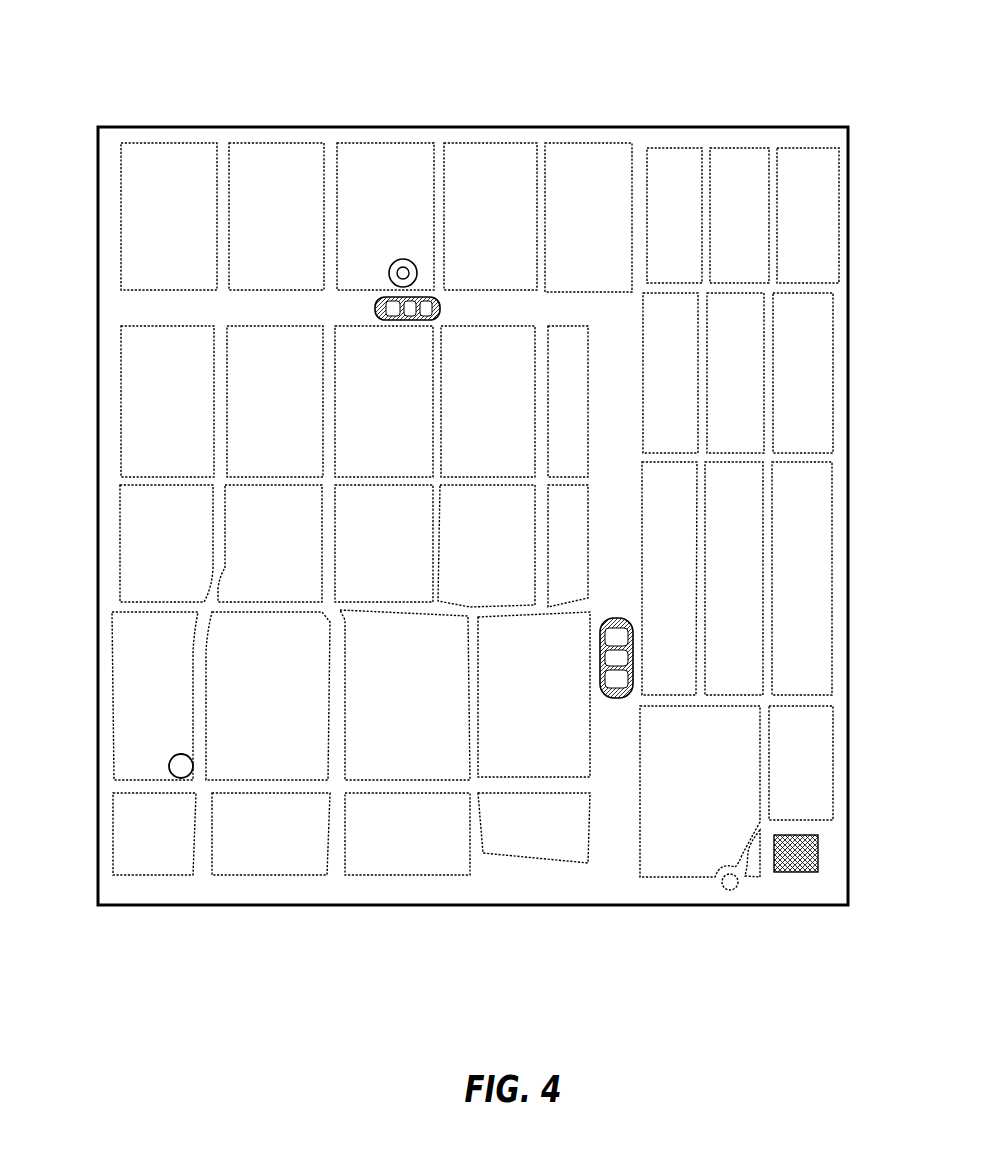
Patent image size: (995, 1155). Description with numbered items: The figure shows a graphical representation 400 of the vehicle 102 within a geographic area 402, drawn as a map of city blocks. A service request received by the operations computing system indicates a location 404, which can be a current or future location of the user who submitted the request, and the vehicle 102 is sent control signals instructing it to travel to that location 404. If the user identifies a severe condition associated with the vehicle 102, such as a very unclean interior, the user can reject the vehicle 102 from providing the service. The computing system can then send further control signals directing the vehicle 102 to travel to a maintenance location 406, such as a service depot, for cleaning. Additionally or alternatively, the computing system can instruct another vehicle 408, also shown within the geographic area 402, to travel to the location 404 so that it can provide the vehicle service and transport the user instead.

The graphical representation 400 is at (205, 46).
The geographic area 402 is at (568, 126).
The location 404 is at (388, 273).
The vehicle 102 is at (375, 301).
The maintenance location 406 is at (170, 760).
The another vehicle 408 is at (633, 655).